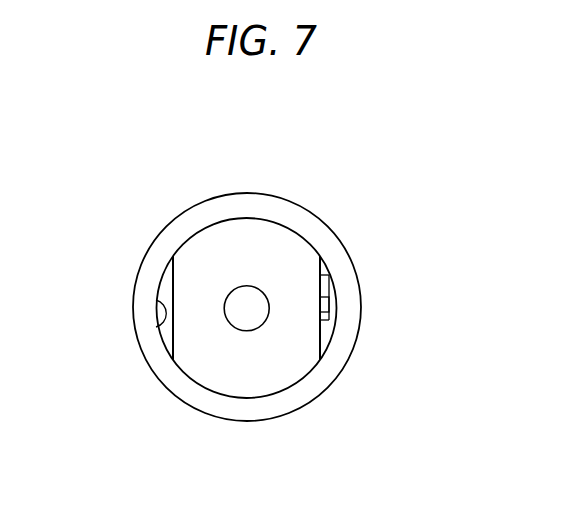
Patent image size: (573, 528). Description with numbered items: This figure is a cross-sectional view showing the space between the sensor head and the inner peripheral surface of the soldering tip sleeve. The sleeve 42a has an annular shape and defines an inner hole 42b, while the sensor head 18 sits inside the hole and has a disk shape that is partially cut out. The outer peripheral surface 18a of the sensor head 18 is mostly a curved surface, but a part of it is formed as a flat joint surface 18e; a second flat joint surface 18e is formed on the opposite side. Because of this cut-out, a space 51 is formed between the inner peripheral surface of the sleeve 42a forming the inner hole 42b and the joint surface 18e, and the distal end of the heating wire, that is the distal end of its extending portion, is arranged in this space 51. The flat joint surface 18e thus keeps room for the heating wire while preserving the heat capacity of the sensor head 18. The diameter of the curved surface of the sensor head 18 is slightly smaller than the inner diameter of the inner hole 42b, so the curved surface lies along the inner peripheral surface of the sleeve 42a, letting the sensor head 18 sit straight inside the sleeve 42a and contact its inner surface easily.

The sensor head 18 is at (213, 253).
The outer peripheral surface 18a is at (220, 393).
The joint surface 18e is at (331, 276).
The sleeve 42a is at (363, 300).
The inner hole 42b is at (158, 331).
The space 51 is at (327, 333).